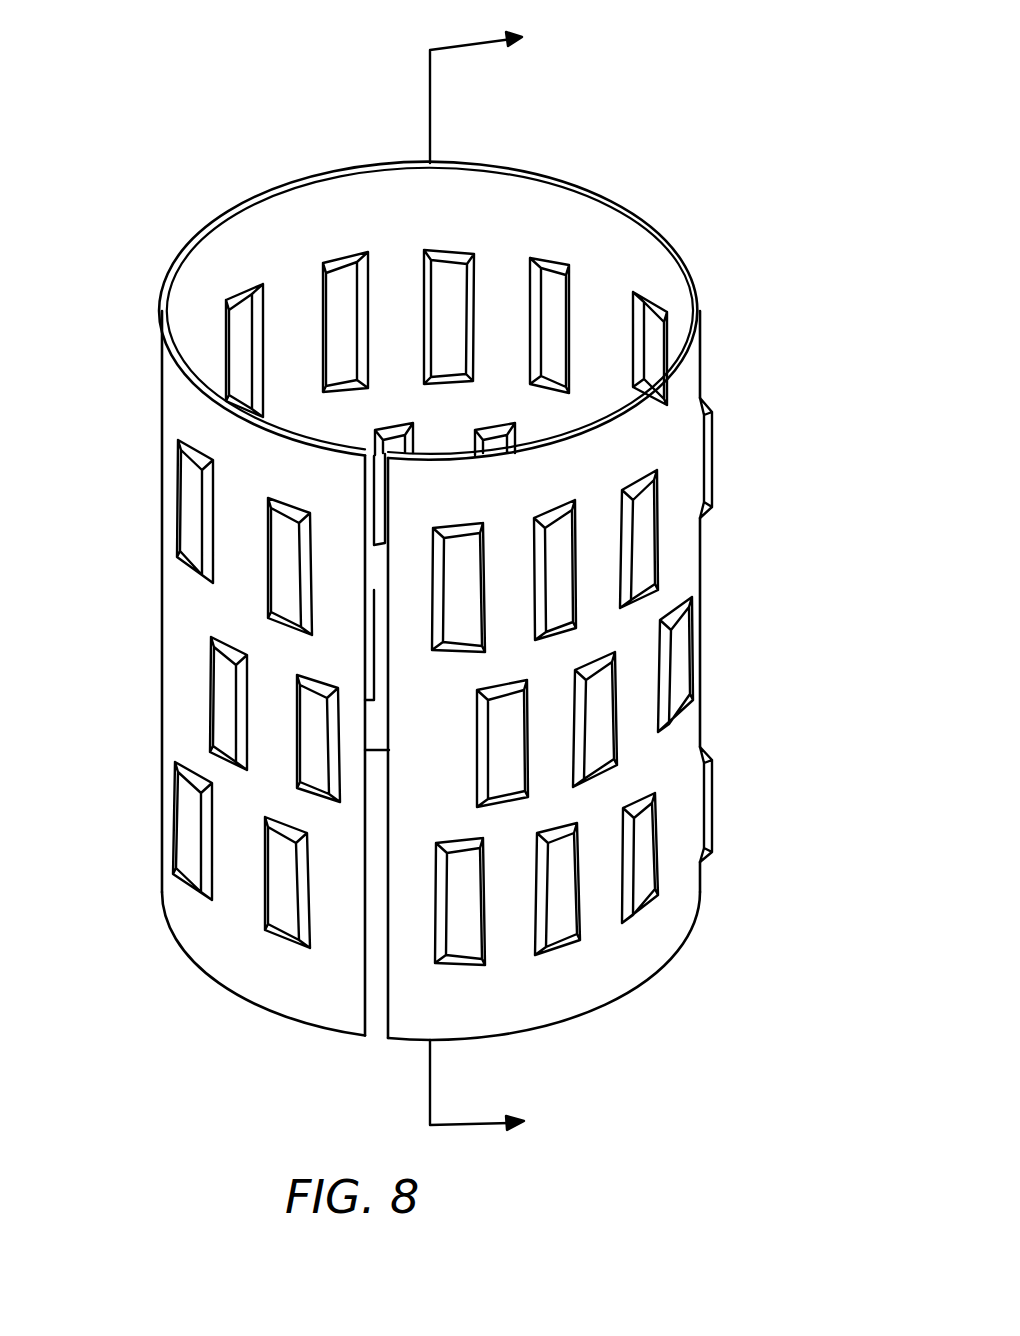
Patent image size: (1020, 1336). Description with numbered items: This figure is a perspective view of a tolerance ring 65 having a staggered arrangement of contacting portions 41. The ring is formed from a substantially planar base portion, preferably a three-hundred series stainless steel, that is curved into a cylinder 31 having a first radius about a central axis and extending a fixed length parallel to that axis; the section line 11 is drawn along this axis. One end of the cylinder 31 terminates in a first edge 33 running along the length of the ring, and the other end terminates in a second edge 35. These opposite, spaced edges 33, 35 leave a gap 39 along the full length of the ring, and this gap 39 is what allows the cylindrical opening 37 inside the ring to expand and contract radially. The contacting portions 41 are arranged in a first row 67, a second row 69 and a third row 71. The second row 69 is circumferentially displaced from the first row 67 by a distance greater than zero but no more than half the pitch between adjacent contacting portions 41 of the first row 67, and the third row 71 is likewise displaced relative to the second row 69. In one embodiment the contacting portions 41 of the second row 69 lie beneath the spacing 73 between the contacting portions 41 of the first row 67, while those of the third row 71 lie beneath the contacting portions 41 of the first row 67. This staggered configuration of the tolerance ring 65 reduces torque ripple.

The section line 11- 11 is at (501, 578).
The cylinder 31 is at (685, 381).
The first edge 33 is at (340, 1007).
The second edge 35 is at (403, 1006).
The cylindrical opening 37 is at (298, 218).
The gap 39 is at (372, 965).
The contacting portions 41 is at (280, 557).
The tolerance ring 65 is at (655, 197).
The first row 67 is at (752, 437).
The second row 69 is at (741, 672).
The third row 71 is at (742, 767).
The spacing 73 is at (242, 580).